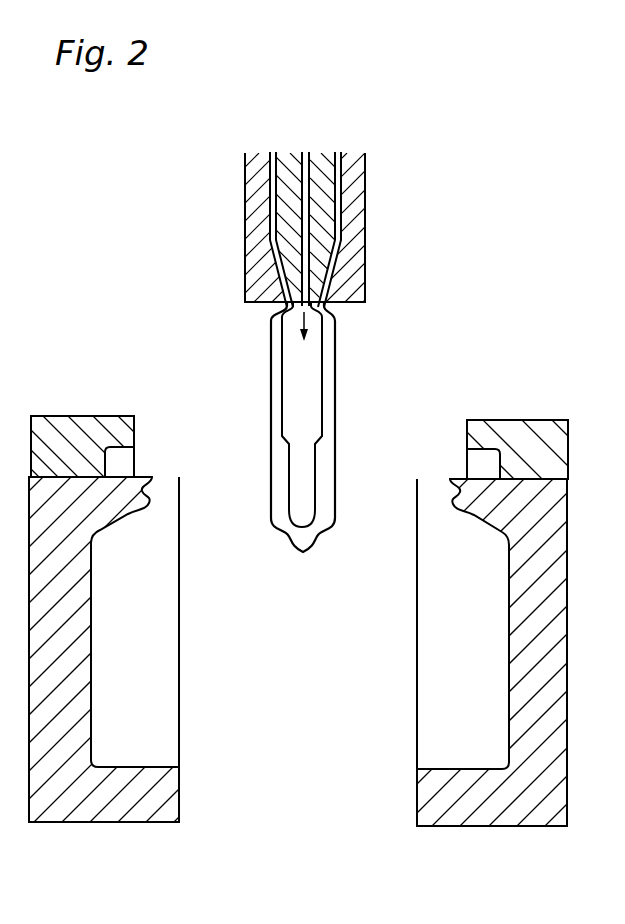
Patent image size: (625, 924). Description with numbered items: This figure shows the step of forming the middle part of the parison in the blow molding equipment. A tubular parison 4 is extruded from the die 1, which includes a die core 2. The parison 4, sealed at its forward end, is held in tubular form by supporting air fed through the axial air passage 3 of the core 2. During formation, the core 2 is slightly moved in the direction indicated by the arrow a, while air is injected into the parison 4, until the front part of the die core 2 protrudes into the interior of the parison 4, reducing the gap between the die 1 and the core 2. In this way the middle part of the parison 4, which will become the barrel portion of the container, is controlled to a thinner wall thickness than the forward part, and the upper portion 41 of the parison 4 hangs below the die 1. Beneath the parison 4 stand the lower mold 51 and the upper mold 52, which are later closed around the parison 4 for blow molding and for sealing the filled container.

The die 1 is at (365, 243).
The die core 2 is at (338, 193).
The axial air passage 3 is at (306, 157).
The arrow a is at (287, 168).
The tubular parison 4 is at (336, 477).
The parison upper portion 41 is at (336, 352).
The lower mold 51 is at (179, 813).
The upper mold 52 is at (134, 433).